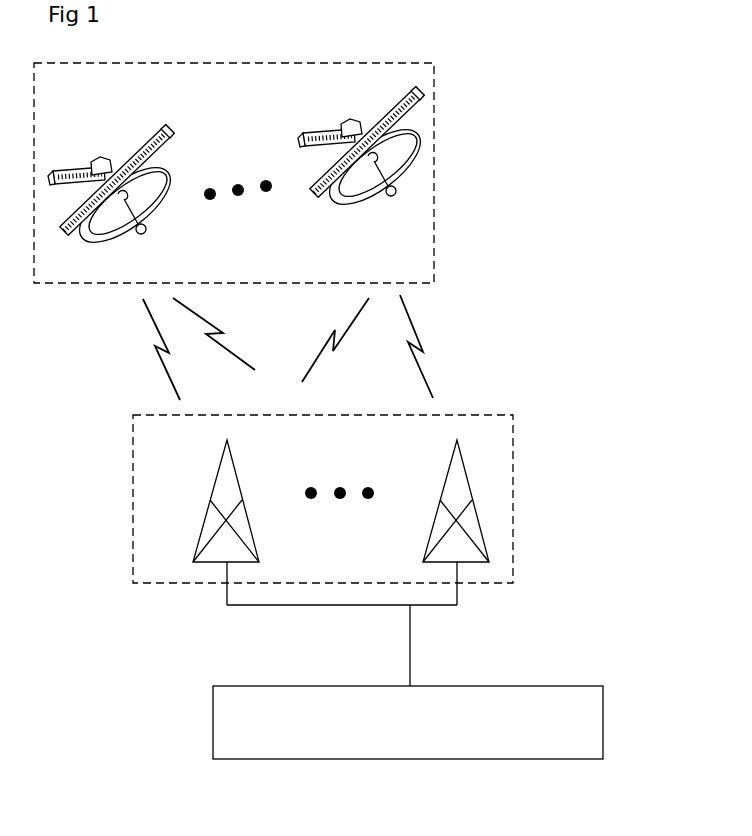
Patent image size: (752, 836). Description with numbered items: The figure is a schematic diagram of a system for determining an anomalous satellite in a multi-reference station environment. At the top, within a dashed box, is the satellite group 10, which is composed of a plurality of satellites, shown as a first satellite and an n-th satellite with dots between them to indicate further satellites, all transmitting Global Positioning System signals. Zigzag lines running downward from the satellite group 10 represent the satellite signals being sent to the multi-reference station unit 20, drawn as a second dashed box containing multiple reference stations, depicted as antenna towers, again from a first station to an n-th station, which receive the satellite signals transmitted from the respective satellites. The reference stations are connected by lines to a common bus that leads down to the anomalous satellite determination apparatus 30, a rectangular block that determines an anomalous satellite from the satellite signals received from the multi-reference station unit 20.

The satellite group 10 is at (269, 173).
The multi-reference station unit 20 is at (289, 510).
The anomalous satellite determination apparatus 30 is at (213, 720).